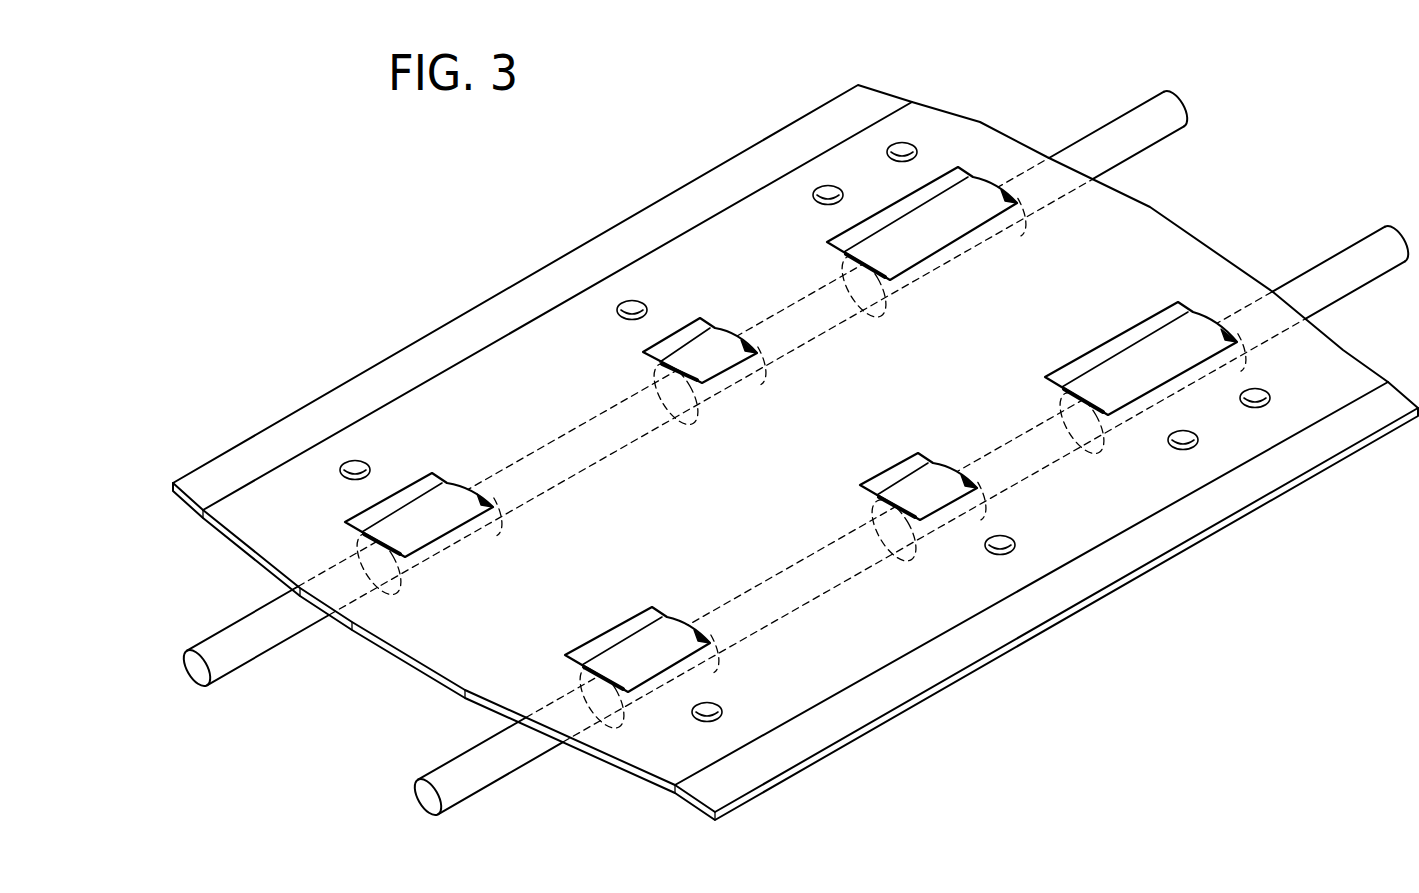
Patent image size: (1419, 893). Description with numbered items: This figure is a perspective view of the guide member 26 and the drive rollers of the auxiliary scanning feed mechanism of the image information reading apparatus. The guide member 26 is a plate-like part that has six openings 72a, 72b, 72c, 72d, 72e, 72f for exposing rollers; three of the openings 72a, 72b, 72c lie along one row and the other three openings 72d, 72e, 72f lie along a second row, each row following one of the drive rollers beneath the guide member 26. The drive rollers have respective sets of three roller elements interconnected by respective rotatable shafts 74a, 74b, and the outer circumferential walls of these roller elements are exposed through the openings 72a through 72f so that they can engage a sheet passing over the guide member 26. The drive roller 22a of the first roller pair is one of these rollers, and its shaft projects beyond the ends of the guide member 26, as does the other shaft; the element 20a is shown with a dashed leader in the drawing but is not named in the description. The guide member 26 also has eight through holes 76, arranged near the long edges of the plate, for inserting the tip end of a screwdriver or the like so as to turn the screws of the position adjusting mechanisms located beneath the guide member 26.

The guide member 26 is at (465, 372).
The drive roller 22a is at (548, 478).
The second refrigerant pipe 20a is at (782, 624).
The opening 72a is at (412, 497).
The opening 72b is at (680, 348).
The opening 72c is at (862, 240).
The opening 72d is at (638, 630).
The opening 72e is at (893, 485).
The opening 72f is at (1105, 358).
The rotatable shaft 74a is at (449, 778).
The rotatable shaft 74b is at (214, 655).
The through hole 76 is at (826, 186).